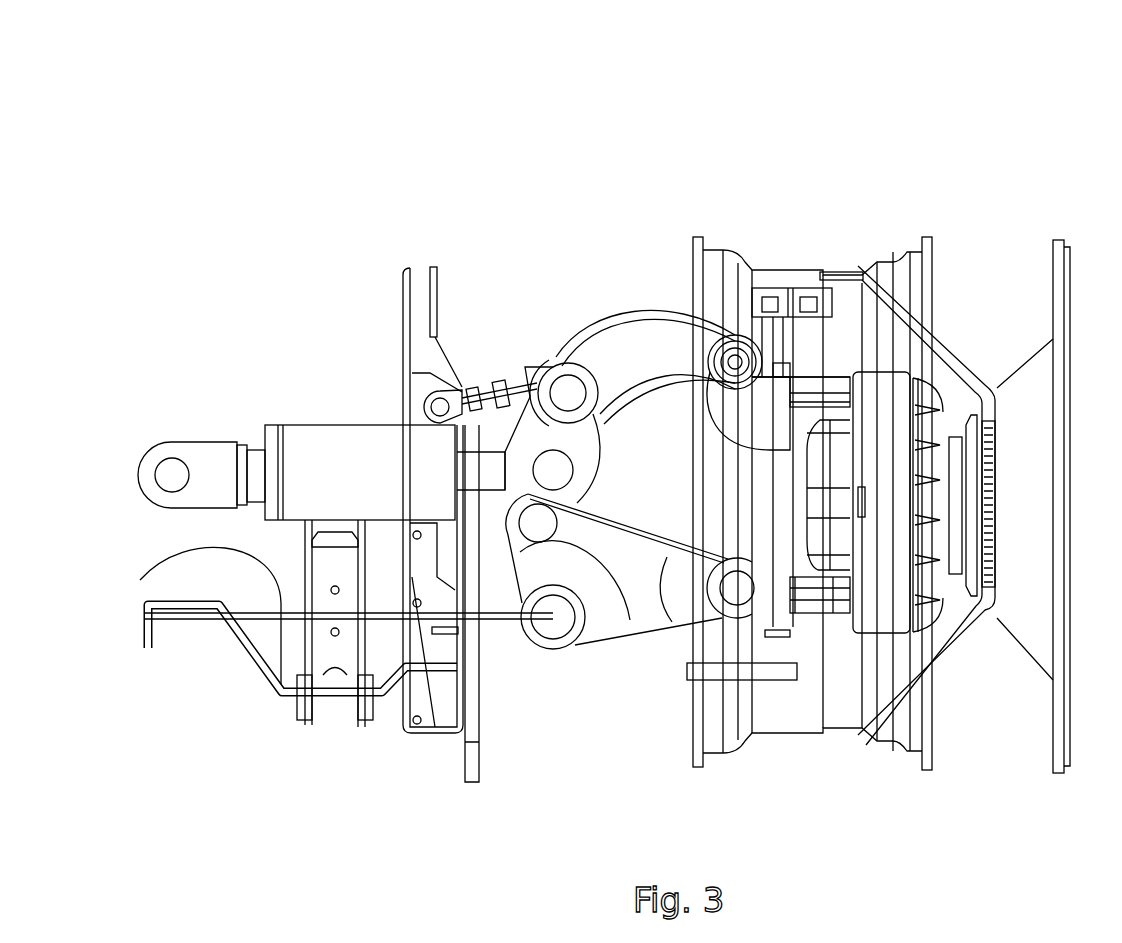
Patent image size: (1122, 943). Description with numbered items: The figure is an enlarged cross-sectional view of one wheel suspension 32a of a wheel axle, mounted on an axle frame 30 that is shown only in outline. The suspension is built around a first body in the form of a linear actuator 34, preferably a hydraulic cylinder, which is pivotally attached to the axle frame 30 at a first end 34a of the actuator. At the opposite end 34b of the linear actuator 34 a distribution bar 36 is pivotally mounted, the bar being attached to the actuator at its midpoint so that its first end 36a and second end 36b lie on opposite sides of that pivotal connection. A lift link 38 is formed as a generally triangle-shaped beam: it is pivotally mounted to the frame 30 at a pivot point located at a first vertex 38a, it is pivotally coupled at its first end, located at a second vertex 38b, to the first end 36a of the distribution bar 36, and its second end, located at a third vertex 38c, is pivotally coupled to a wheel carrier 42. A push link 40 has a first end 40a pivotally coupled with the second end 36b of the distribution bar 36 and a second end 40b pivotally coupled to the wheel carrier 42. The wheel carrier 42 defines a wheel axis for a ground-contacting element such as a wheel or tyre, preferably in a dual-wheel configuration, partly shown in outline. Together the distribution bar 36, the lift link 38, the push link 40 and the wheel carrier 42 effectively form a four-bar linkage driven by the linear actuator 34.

The axle frame 30 is at (243, 620).
The wheel suspension 32a is at (558, 157).
The linear actuator 34 is at (323, 450).
The first end of the actuator 34a is at (183, 432).
The opposite end of the linear actuator 34b is at (518, 488).
The distribution bar 36 is at (453, 501).
The first end of the distribution bar 36a is at (432, 657).
The second end of the distribution bar 36b is at (524, 301).
The lift link 38 is at (678, 670).
The first vertex of the triangle-shaped beam 38a is at (546, 685).
The second vertex of the triangle-shaped beam 38b is at (530, 543).
The third vertex of the triangle-shaped beam 38c is at (768, 645).
The push link 40 is at (650, 335).
The first end of the push link 40a is at (575, 328).
The second end of the push link 40b is at (775, 263).
The wheel carrier 42 is at (950, 218).